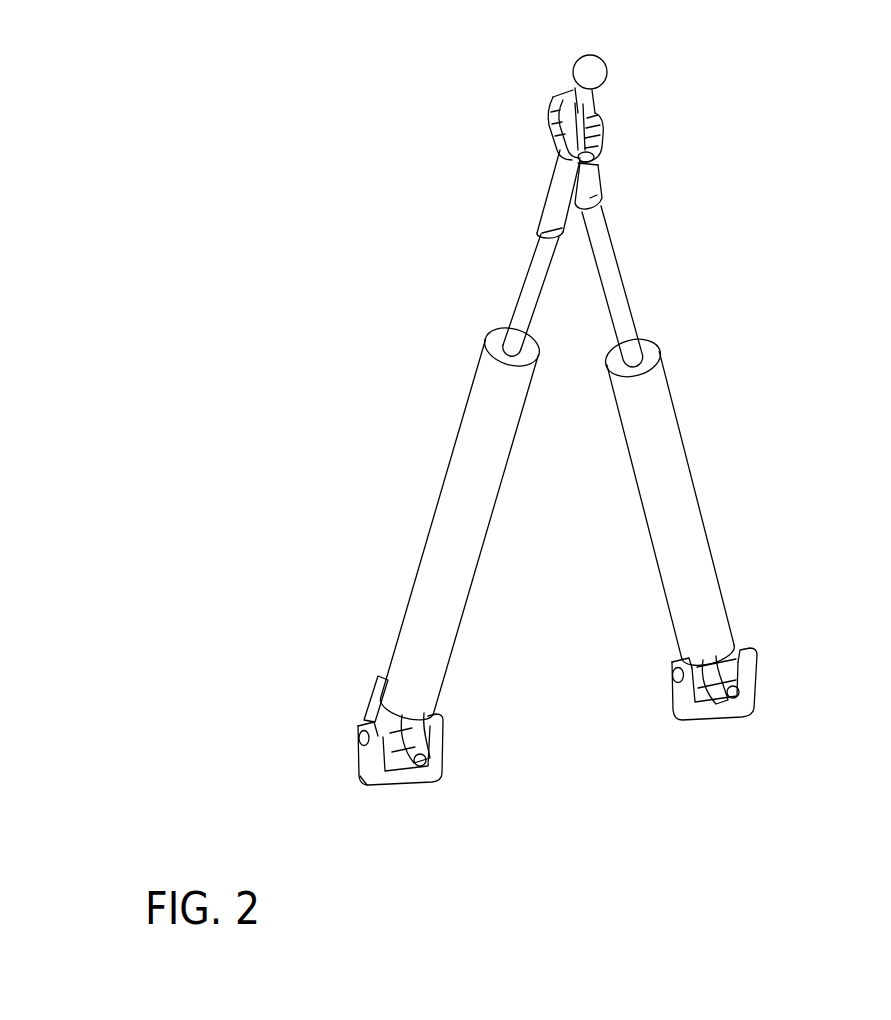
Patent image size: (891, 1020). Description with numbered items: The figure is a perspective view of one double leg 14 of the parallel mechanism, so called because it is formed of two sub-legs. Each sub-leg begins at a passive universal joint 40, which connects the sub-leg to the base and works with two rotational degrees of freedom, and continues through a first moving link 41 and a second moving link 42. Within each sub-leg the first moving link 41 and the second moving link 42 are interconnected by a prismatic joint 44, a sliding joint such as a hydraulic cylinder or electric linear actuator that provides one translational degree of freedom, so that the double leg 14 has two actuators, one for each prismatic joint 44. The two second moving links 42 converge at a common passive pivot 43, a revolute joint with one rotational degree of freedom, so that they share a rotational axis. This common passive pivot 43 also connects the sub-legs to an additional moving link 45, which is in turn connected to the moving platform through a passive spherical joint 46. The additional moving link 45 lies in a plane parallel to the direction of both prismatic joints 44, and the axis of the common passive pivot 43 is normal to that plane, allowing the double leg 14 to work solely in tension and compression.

The double leg 14 is at (305, 281).
The passive universal joint 40 is at (432, 745).
The first moving link 41 is at (422, 587).
The second moving link 42 is at (515, 288).
The common passive pivot 43 is at (601, 158).
The prismatic joint 44 is at (488, 359).
The additional moving link 45 is at (600, 101).
The passive spherical joint 46 is at (610, 66).